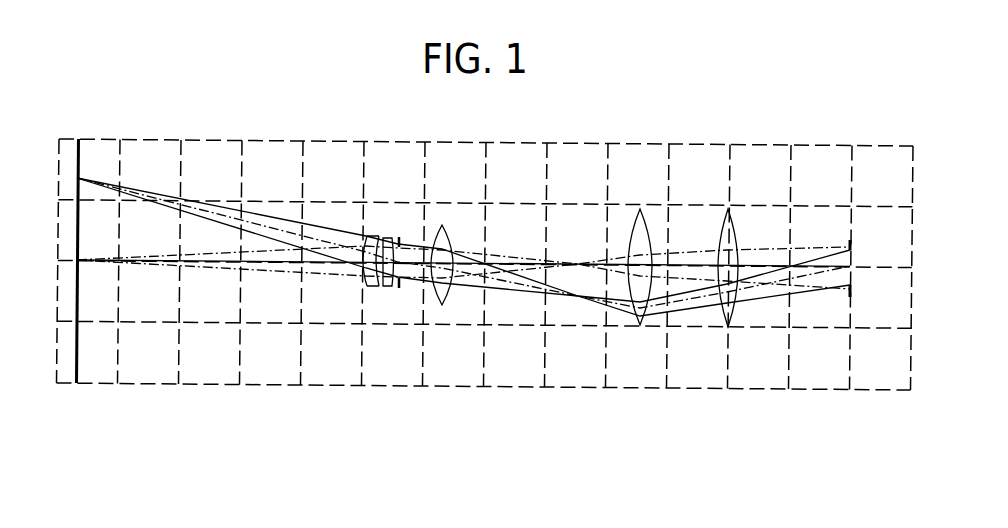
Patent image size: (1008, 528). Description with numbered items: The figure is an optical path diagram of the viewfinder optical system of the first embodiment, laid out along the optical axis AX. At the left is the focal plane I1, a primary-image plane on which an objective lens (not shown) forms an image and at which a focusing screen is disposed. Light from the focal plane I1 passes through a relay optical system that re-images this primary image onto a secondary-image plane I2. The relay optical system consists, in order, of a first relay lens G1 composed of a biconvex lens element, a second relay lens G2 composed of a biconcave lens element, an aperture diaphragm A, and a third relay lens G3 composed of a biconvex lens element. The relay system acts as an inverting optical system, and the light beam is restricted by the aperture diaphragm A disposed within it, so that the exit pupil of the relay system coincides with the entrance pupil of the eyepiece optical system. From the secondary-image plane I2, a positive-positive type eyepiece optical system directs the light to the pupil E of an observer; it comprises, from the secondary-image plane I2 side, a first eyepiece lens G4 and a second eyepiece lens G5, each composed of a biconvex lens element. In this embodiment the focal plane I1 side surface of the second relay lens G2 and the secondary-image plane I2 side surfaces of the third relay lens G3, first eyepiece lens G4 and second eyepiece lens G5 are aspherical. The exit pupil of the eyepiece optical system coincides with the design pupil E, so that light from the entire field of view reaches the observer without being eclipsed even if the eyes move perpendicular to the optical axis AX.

The focal plane I1 is at (77, 352).
The first relay lens G1 is at (365, 291).
The second relay lens G2 is at (383, 289).
The aperture diaphragm A is at (399, 289).
The third relay lens G3 is at (442, 306).
The secondary-image plane I2 is at (578, 296).
The first eyepiece lens G4 is at (640, 326).
The second eyepiece lens G5 is at (728, 328).
The optical axis AX is at (810, 268).
The pupil E is at (851, 296).